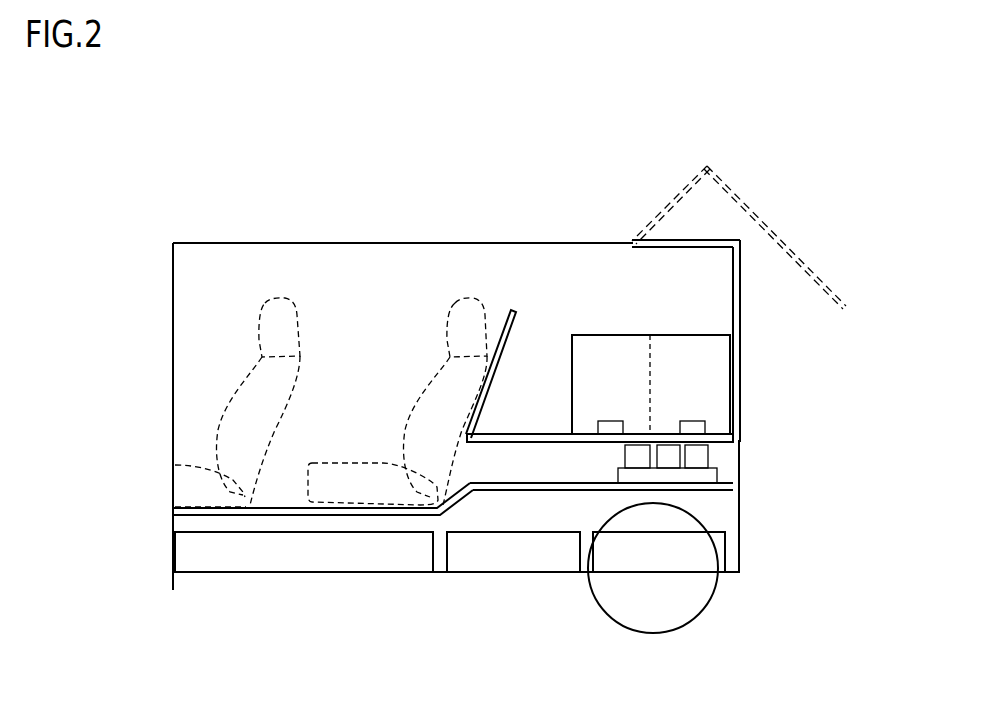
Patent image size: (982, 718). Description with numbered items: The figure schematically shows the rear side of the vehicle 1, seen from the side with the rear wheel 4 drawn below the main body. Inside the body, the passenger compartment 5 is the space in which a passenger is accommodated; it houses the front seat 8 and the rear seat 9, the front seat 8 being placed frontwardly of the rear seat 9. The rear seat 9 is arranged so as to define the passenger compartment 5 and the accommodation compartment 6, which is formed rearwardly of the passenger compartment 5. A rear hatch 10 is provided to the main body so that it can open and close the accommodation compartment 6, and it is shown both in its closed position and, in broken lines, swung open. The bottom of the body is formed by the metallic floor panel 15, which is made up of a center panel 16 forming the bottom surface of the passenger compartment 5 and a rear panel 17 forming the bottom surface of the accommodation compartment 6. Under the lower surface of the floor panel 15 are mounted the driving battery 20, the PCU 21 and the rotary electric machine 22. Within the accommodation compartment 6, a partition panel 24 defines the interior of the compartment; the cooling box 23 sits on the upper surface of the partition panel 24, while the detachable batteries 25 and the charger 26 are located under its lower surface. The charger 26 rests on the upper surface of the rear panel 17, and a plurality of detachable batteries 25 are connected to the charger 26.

The vehicle 1 is at (205, 205).
The rear wheel 4 is at (710, 605).
The passenger compartment 5 is at (351, 271).
The accommodation compartment 6 is at (596, 271).
The front seat 8 is at (275, 296).
The rear seat 9 is at (467, 296).
The rear hatch 10 is at (707, 167).
The floor panel 15 is at (466, 508).
The center panel 16 is at (173, 515).
The rear panel 17 is at (683, 490).
The driving battery 20 is at (367, 558).
The PCU 21 is at (536, 565).
The rotary electric machine 22 is at (657, 565).
The cooling box 23 is at (735, 390).
The partition panel 24 is at (733, 438).
The detachable battery 25 is at (708, 460).
The charger 26 is at (705, 481).